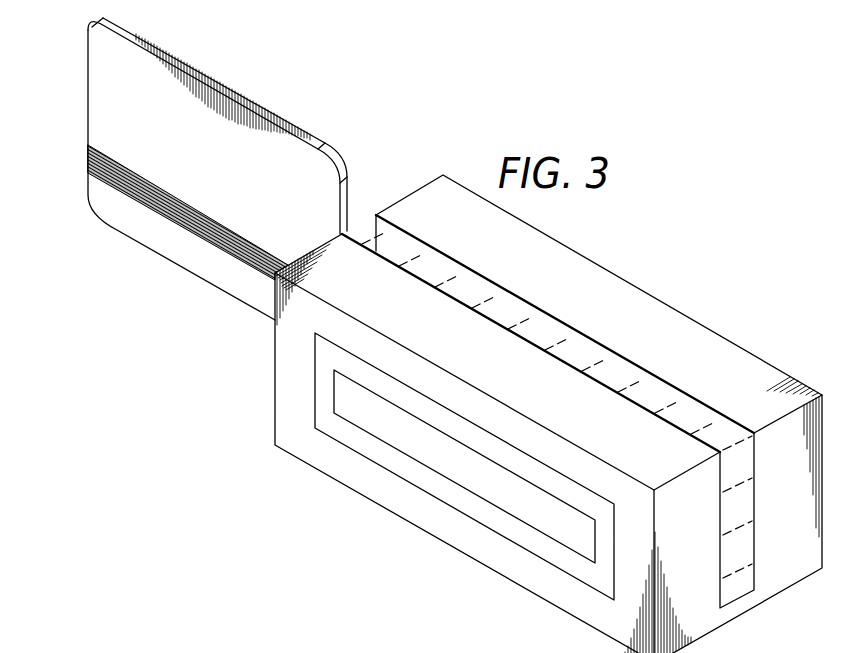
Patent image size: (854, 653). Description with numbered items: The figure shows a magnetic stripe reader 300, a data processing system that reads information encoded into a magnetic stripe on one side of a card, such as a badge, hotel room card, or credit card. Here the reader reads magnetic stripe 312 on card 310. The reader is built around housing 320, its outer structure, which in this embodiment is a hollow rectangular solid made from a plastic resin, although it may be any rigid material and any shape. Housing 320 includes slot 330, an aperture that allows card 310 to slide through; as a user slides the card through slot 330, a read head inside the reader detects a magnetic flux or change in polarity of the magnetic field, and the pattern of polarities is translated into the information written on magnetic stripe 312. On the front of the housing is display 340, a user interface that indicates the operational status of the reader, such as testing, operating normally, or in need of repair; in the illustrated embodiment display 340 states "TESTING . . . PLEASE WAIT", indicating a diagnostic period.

The magnetic stripe reader 300 is at (645, 284).
The card 310 is at (81, 96).
The magnetic stripe 312 is at (87, 155).
The housing 320 is at (360, 485).
The slot 330 is at (540, 327).
The display 340 is at (463, 497).